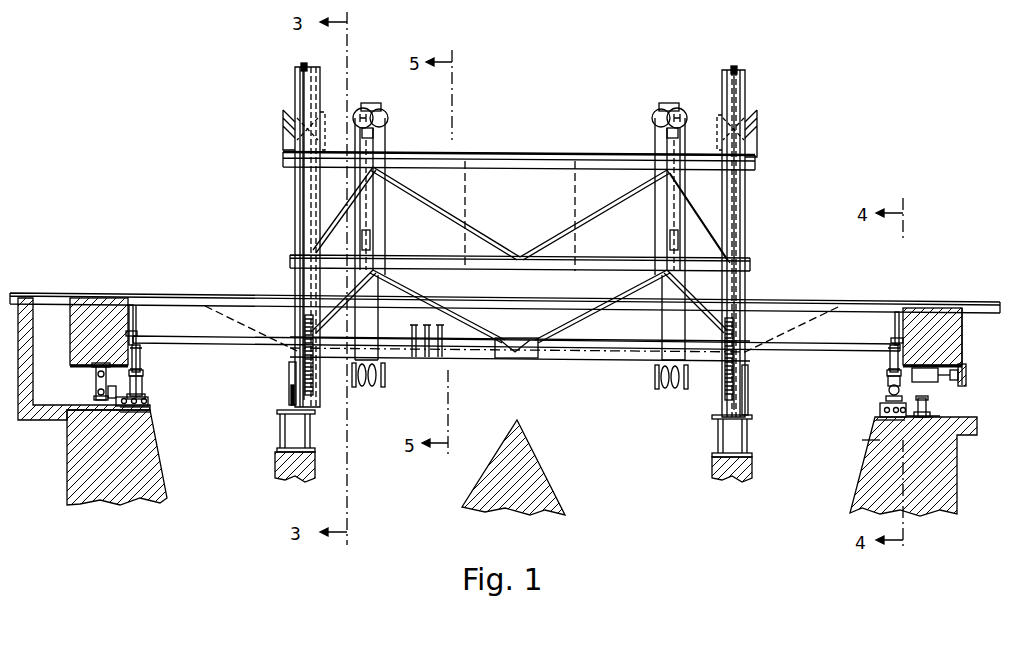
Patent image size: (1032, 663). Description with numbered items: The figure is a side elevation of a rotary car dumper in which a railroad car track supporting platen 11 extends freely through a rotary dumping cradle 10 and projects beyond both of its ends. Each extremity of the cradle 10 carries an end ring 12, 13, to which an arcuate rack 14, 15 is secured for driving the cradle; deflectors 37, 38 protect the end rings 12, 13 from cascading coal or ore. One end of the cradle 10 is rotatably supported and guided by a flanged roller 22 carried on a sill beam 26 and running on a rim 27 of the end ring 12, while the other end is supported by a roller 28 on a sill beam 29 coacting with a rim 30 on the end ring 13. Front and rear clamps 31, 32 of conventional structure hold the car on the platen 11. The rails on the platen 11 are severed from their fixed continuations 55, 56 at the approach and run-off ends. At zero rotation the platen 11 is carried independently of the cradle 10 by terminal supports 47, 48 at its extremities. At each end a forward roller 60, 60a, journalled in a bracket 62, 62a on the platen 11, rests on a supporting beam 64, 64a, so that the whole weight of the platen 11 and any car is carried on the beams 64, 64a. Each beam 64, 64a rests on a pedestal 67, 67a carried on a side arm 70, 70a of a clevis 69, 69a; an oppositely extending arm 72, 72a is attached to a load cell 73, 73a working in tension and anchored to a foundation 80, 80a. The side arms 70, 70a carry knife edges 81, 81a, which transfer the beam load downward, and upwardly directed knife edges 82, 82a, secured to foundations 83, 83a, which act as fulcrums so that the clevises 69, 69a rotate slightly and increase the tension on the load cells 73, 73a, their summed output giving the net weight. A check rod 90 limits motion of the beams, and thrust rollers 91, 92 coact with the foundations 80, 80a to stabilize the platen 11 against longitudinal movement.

The rotary railroad car dumping cradle 10 is at (520, 152).
The platen 11 is at (147, 290).
The end ring 12 is at (320, 100).
The end ring 13 is at (724, 95).
The arcuate rack 14 is at (314, 388).
The arcuate rack 15 is at (724, 390).
The flanged roller 22 is at (290, 393).
The sill beam 26 is at (312, 432).
The rim 27 is at (302, 66).
The roller 28 is at (749, 405).
The sill beam 29 is at (752, 435).
The rim 30 is at (736, 70).
The front clamp 31 is at (380, 108).
The rear clamp 32 is at (668, 104).
The deflector 37 is at (290, 120).
The deflector 38 is at (752, 122).
The terminal support 47 is at (143, 378).
The terminal support 48 is at (889, 389).
The rail continuation 55 is at (95, 295).
The rail continuation 56 is at (988, 306).
The forward roller 60 is at (143, 373).
The forward roller 60a is at (889, 373).
The bracket 62 is at (143, 355).
The bracket 62a is at (891, 360).
The supporting beam 64 is at (143, 386).
The supporting beam 64a is at (888, 381).
The pedestal 67 is at (146, 396).
The pedestal 67a is at (886, 398).
The clevis 69 is at (112, 398).
The clevis 69a is at (924, 398).
The clevis arm 70 is at (148, 402).
The clevis arm 70a is at (882, 408).
The clevis arm 72 is at (99, 398).
The clevis arm 72a is at (928, 408).
The load cell 73 is at (98, 386).
The load cell 73a is at (935, 414).
The foundation 80 is at (85, 352).
The foundation 80a is at (960, 335).
The knife edge 81 is at (150, 418).
The knife edge 81a is at (878, 425).
The knife edge 82 is at (146, 408).
The knife edge 82a is at (878, 418).
The foundation 83 is at (145, 432).
The foundation 83a is at (872, 440).
The check rod 90 is at (940, 374).
The thrust roller 91 is at (137, 333).
The thrust roller 92 is at (900, 312).